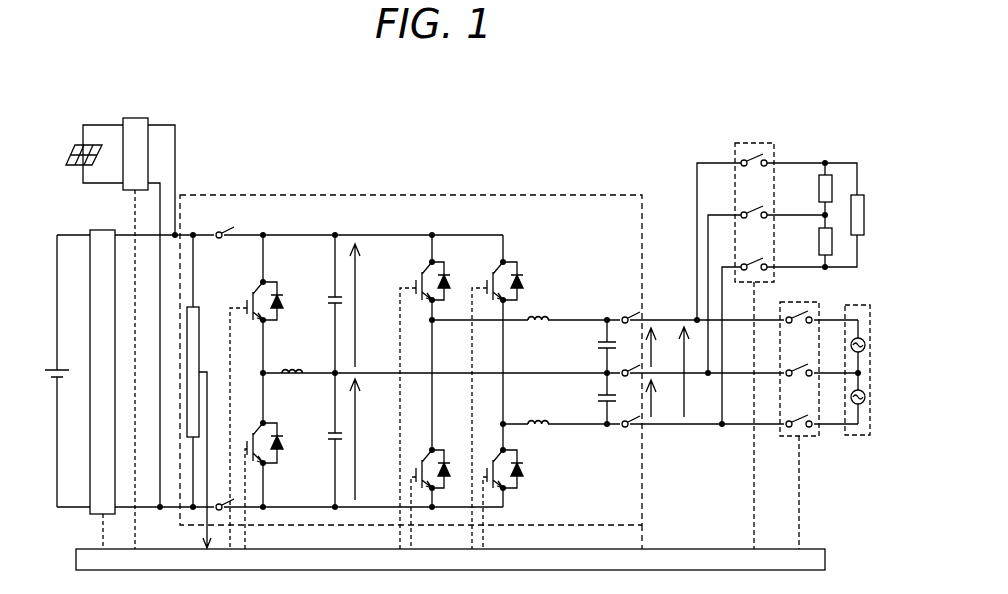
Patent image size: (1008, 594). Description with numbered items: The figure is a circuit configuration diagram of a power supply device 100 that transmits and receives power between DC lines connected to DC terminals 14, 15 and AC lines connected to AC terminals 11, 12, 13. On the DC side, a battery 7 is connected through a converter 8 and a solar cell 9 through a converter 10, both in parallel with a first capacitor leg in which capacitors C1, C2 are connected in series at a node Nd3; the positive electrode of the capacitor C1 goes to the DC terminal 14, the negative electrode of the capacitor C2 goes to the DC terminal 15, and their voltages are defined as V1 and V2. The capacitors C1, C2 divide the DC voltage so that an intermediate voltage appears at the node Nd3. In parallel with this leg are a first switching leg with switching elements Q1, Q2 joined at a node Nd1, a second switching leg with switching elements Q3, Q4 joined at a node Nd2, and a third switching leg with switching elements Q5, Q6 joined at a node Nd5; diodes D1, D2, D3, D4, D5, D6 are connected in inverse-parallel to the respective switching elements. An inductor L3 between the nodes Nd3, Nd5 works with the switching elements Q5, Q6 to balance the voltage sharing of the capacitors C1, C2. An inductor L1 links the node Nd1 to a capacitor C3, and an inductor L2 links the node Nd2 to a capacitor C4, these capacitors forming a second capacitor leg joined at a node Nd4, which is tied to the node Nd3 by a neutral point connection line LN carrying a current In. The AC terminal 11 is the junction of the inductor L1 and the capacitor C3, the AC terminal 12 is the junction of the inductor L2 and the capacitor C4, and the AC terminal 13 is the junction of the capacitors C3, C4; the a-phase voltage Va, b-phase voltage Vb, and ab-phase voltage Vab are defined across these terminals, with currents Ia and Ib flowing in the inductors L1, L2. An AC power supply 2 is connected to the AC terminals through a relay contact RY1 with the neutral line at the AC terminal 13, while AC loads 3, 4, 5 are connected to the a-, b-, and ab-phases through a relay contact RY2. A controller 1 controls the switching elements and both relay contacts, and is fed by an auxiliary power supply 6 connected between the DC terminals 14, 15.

The controller 1 is at (827, 555).
The AC power supply 2 is at (855, 440).
The AC load 3 is at (818, 189).
The AC load 4 is at (818, 242).
The AC load 5 is at (858, 194).
The auxiliary power supply 6 is at (199, 307).
The battery 7 is at (62, 368).
The converter 8 is at (103, 230).
The solar cell 9 is at (78, 167).
The converter 10 is at (141, 117).
The AC terminal 11 is at (622, 317).
The AC terminal 12 is at (622, 421).
The AC terminal 13 is at (622, 370).
The DC terminal 14 is at (218, 232).
The DC terminal 15 is at (218, 504).
The power supply device 100 is at (567, 194).
The relay contact RY1 is at (810, 440).
The relay contact RY2 is at (742, 142).
The switching element Q1 is at (422, 279).
The switching element Q2 is at (422, 467).
The switching element Q3 is at (493, 279).
The switching element Q4 is at (493, 467).
The switching element Q5 is at (253, 296).
The switching element Q6 is at (253, 441).
The diode D1 is at (447, 277).
The diode D2 is at (447, 464).
The diode D3 is at (519, 277).
The diode D4 is at (519, 465).
The diode D5 is at (283, 292).
The diode D6 is at (283, 436).
The capacitor C1 is at (331, 298).
The capacitor C2 is at (332, 444).
The capacitor C3 is at (600, 343).
The capacitor C4 is at (600, 394).
The inductor L1 is at (540, 318).
The inductor L2 is at (535, 420).
The inductor L3 is at (293, 370).
The node Nd1 is at (434, 323).
The node Nd2 is at (501, 421).
The node Nd3 is at (333, 376).
The node Nd4 is at (605, 371).
The node Nd5 is at (265, 370).
The neutral point connection line LN is at (383, 372).
The voltage V1 is at (367, 305).
The voltage V2 is at (367, 439).
The a-phase voltage Va is at (662, 347).
The b-phase voltage Vb is at (663, 398).
The ab-phase voltage Vab is at (699, 372).
The current Ia is at (595, 314).
The current Ib is at (560, 431).
The current In is at (538, 371).